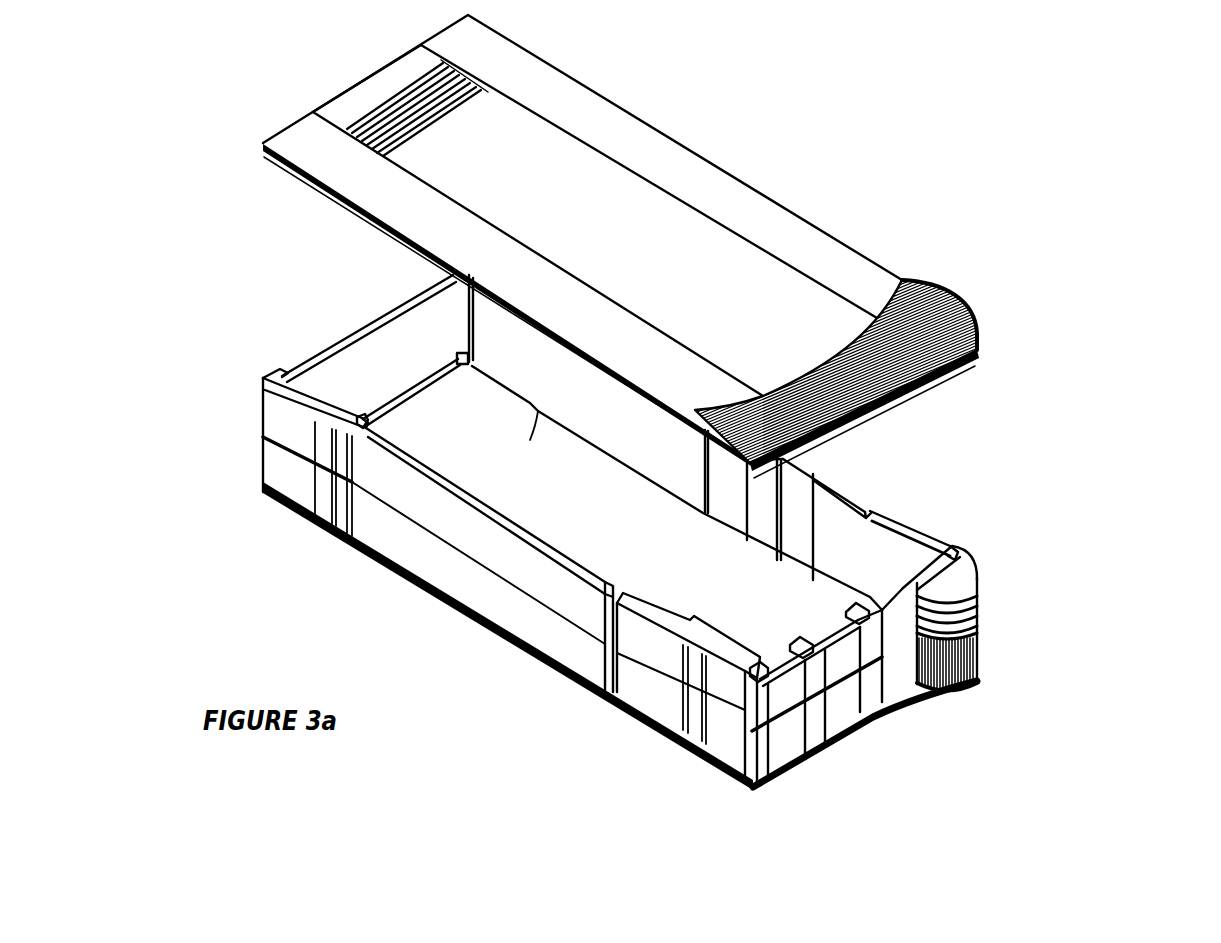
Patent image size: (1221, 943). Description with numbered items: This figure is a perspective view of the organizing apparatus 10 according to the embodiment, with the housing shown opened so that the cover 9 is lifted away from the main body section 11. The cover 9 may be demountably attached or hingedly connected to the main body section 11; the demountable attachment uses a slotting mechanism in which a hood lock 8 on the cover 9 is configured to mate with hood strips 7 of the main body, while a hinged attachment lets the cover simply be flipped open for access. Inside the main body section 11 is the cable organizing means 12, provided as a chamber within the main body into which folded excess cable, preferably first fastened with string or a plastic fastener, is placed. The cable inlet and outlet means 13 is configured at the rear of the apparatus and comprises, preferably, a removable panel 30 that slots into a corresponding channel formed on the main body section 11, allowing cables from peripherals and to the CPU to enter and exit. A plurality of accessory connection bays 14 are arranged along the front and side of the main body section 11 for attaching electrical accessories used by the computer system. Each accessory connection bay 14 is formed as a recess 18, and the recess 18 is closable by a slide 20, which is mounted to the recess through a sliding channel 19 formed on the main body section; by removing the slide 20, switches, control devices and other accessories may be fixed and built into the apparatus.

The hood strips 7 is at (917, 530).
The hood lock 8 is at (706, 468).
The cover 9 is at (775, 202).
The cartridge assembly 10 is at (1126, 284).
The main body section 11 is at (977, 650).
The cable organizing means 12 is at (457, 358).
The cable inlet and outlet means 13 is at (267, 341).
The accessory connection bay 14 is at (812, 466).
The recess 18 is at (901, 678).
The sliding channel 19 is at (877, 612).
The slide 20 is at (843, 703).
The removable panel 30 is at (353, 328).